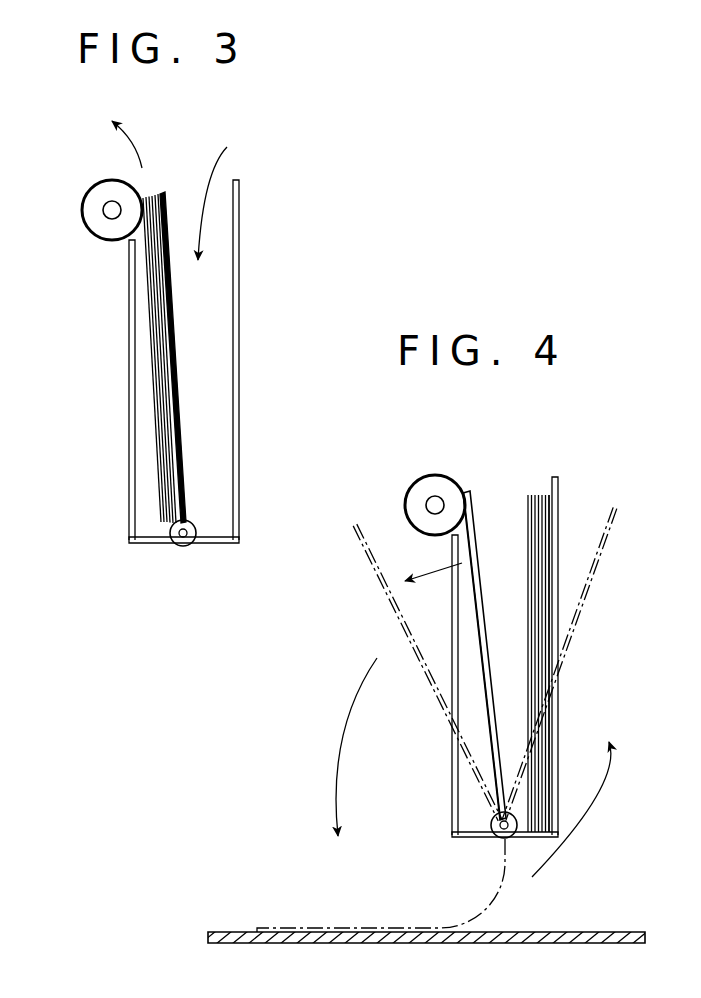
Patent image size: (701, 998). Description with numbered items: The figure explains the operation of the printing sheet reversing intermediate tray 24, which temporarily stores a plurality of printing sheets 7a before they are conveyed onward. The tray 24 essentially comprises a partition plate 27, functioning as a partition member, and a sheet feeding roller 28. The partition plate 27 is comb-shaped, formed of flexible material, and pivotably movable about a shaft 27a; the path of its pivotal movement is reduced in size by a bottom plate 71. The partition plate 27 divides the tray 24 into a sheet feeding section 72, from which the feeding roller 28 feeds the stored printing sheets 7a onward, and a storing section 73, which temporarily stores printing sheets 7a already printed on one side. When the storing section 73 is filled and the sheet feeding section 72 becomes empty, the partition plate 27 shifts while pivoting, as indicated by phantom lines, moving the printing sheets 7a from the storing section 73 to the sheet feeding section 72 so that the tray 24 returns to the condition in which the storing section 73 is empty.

In FIG. 3, the printing sheet 7a is at (155, 317).
In FIG. 4, the printing sheet 7a is at (538, 527).
In FIG. 3, the printing sheet reversing intermediate tray 24 is at (238, 400).
In FIG. 4, the printing sheet reversing intermediate tray 24 is at (452, 782).
In FIG. 3, the partition plate 27 is at (175, 345).
In FIG. 4, the partition plate 27 is at (475, 520).
In FIG. 3, the shaft 27a is at (183, 546).
In FIG. 4, the shaft 27a is at (500, 827).
In FIG. 3, the sheet feeding roller 28 is at (88, 218).
In FIG. 4, the sheet feeding roller 28 is at (423, 488).
In FIG. 4, the bottom plate 71 is at (230, 932).
In FIG. 3, the sheet feeding section 72 is at (142, 412).
In FIG. 4, the sheet feeding section 72 is at (467, 688).
In FIG. 3, the storing section 73 is at (208, 302).
In FIG. 4, the storing section 73 is at (507, 700).